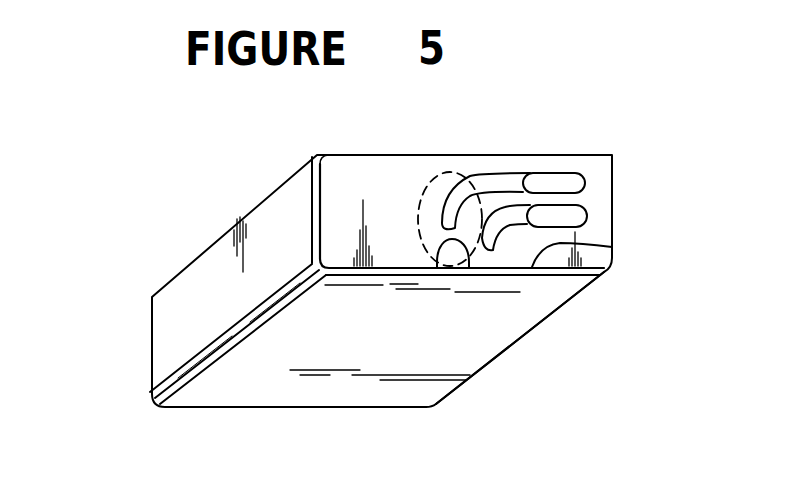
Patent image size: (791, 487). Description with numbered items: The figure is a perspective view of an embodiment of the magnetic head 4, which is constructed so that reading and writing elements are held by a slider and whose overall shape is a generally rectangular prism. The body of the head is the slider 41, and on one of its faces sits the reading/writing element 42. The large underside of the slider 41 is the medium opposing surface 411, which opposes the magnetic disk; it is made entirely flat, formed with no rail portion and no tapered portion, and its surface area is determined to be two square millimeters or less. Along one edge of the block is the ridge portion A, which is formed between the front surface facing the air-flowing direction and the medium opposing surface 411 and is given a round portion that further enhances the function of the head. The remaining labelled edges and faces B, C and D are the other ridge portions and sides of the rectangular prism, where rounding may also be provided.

The magnetic head 4 is at (241, 172).
The slider 41 is at (200, 279).
The medium opposing surface 411 is at (307, 322).
The reading/writing element 42 is at (434, 172).
The ridge portion A is at (415, 408).
The side surface B is at (612, 247).
The bevelled edge C is at (207, 357).
The slanted side surface D is at (538, 328).